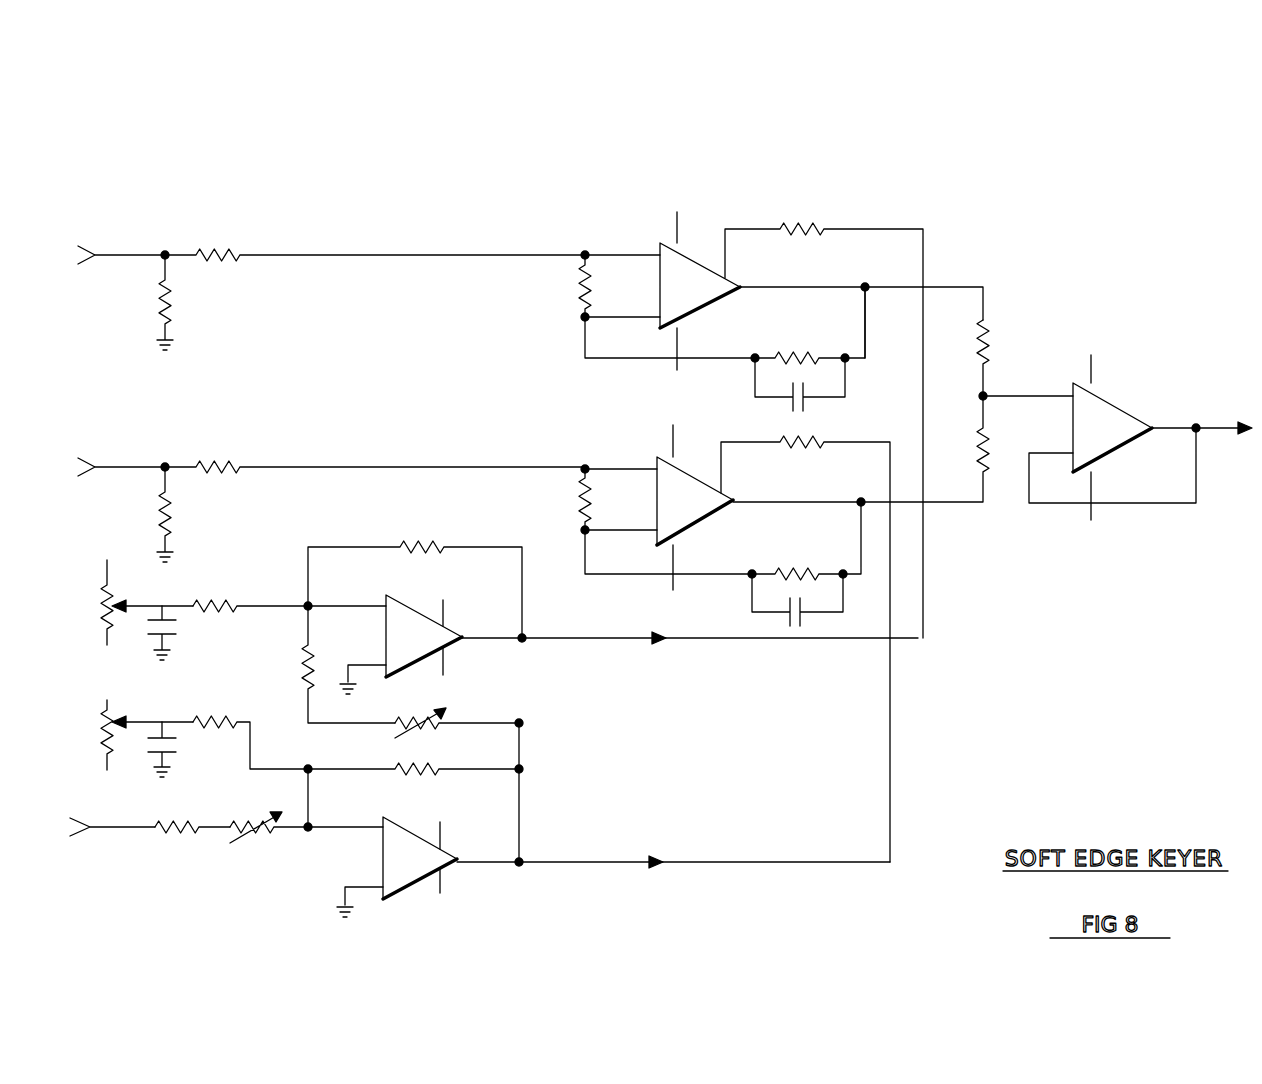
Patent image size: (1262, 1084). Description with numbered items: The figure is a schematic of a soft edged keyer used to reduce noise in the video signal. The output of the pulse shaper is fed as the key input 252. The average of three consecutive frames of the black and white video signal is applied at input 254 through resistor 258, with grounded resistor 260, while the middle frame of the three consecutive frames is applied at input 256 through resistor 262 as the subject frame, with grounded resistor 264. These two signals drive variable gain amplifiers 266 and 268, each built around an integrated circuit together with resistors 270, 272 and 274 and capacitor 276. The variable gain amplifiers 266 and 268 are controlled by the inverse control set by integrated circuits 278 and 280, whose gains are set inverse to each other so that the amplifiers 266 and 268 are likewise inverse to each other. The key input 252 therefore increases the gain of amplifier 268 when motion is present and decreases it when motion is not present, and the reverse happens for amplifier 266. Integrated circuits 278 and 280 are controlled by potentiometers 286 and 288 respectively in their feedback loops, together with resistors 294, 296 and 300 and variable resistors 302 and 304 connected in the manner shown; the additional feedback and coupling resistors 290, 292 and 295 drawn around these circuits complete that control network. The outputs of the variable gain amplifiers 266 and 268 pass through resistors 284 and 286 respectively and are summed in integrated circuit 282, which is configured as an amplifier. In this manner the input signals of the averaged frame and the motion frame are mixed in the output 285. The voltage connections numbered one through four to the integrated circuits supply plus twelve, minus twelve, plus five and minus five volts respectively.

The key input 252 is at (118, 830).
The averaged frame input 254 is at (106, 251).
The subject frame input 256 is at (106, 464).
The resistor 258 is at (230, 251).
The grounded resistor 260 is at (172, 302).
The resistor 262 is at (228, 464).
The grounded resistor 264 is at (172, 515).
The variable gain amplifier 266 is at (686, 316).
The variable gain amplifier 268 is at (694, 520).
The resistor 270 is at (580, 293).
The resistor 272 is at (808, 228).
The resistor 274 is at (793, 356).
The capacitor 276 is at (806, 406).
The integrated circuit 278 is at (402, 594).
The integrated circuit 280 is at (454, 872).
The integrated circuit 282 is at (1104, 396).
The resistor 284 is at (989, 350).
The output 285 is at (1214, 428).
The potentiometer / resistor 286 is at (988, 448).
The potentiometer 288 is at (102, 752).
The feedback resistor 290 is at (402, 539).
The resistor 292 is at (414, 774).
The resistor 294 is at (226, 603).
The resistor 295 is at (304, 654).
The resistor 296 is at (221, 720).
The resistor 300 is at (170, 832).
The variable resistor 302 is at (258, 832).
The variable resistor 304 is at (414, 720).